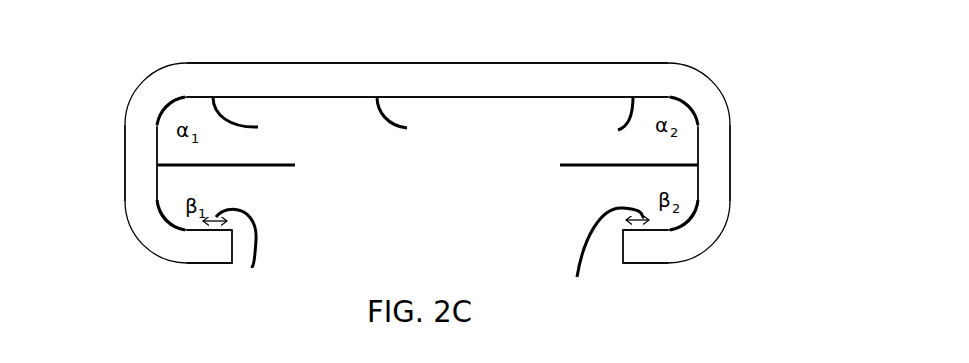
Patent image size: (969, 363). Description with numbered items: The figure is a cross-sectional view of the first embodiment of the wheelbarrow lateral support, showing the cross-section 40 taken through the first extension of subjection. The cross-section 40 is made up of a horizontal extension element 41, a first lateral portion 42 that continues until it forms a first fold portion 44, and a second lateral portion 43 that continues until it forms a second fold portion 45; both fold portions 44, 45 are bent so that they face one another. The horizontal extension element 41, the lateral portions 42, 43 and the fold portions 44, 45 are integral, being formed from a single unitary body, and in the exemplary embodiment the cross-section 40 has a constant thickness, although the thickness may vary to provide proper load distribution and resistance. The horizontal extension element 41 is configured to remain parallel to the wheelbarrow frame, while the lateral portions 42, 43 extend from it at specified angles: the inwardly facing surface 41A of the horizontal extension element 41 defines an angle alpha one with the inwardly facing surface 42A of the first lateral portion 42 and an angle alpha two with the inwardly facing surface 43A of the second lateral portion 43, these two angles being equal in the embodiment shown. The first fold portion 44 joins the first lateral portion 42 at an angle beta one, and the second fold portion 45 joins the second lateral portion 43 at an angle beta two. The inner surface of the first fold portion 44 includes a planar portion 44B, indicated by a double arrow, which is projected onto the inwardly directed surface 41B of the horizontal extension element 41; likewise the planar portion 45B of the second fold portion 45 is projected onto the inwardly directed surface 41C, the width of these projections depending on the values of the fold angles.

The cross-section 40 is at (715, 74).
The horizontal extension element 41 is at (448, 73).
The inwardly facing surface of the horizontal extension element 41A is at (413, 120).
The inwardly directed surface 41B is at (258, 117).
The inwardly directed surface 41C is at (603, 119).
The first lateral portion 42 is at (126, 165).
The inwardly facing surface of the first lateral portion 42A is at (247, 165).
The second lateral portion 43 is at (732, 164).
The inwardly facing surface of the second lateral portion 43A is at (606, 164).
The first fold portion 44 is at (199, 253).
The planar portion 44B is at (235, 251).
The second fold portion 45 is at (658, 252).
The planar portion 45B is at (605, 255).